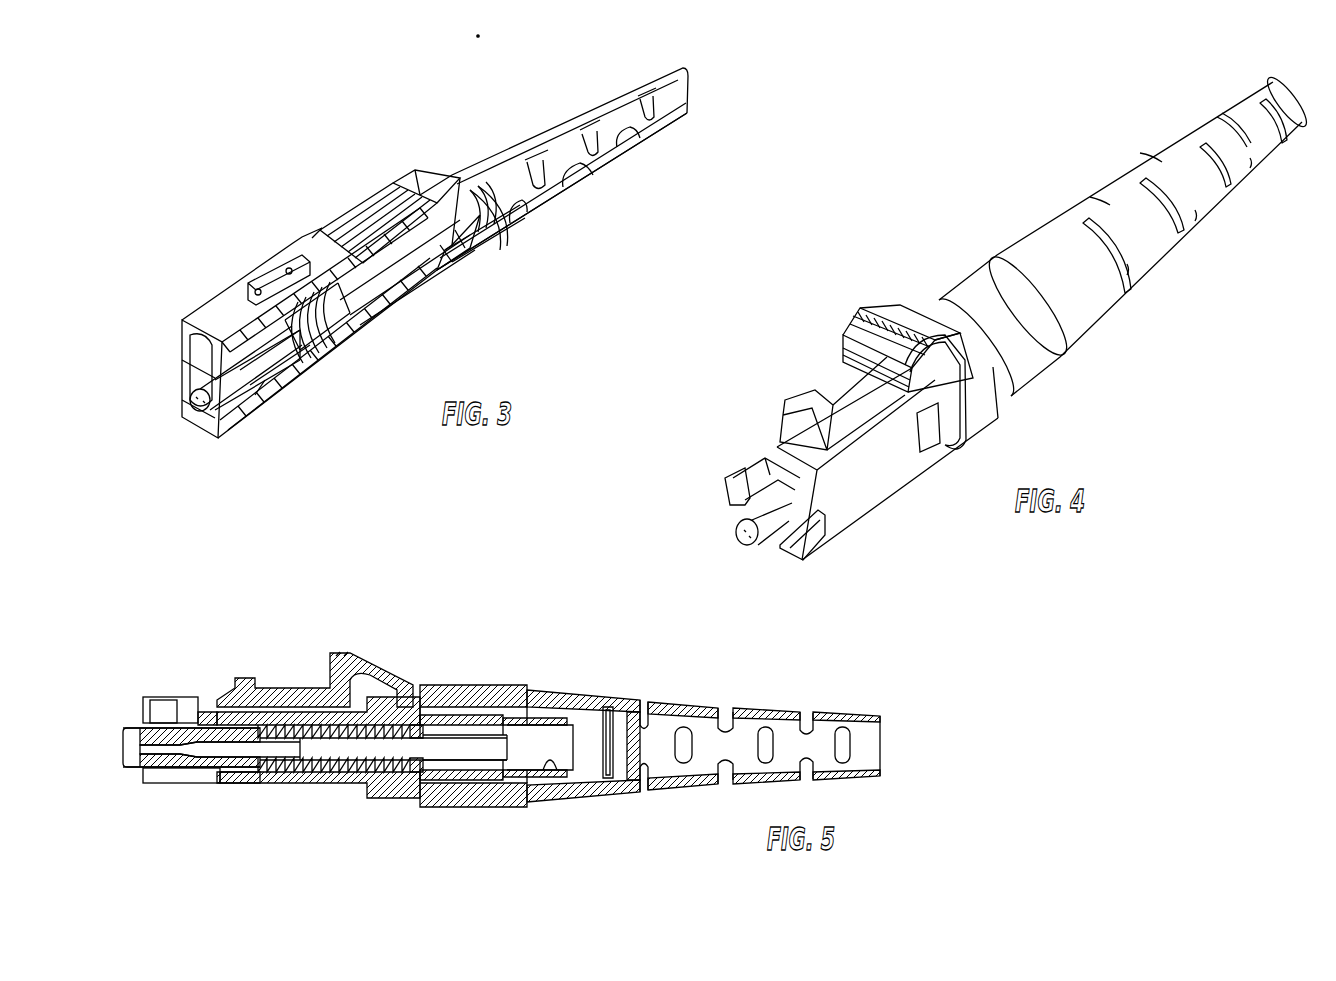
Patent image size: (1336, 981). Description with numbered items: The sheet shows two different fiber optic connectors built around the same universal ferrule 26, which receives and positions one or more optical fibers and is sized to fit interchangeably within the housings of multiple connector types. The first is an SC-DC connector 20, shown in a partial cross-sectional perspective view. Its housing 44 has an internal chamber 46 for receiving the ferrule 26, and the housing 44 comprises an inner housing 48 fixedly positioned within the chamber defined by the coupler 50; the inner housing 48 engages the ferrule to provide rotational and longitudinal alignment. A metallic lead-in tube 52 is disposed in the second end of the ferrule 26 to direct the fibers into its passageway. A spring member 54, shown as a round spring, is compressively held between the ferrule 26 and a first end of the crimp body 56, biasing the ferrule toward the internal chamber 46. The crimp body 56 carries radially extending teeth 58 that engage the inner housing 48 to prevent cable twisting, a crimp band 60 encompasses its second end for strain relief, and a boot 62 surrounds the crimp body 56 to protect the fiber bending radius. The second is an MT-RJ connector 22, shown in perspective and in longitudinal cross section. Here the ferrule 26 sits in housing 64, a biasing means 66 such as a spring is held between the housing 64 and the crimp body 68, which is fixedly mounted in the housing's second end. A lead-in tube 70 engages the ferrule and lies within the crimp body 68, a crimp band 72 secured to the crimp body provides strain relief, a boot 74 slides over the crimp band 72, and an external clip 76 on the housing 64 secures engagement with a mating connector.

In FIG. 3, the optical fiber connector 20 is at (587, 263).
In FIG. 4, the optical fiber connector 22 is at (1132, 405).
In FIG. 5, the optical fiber connector 22 is at (488, 840).
In FIG. 3, the universal ferrule 26 is at (193, 380).
In FIG. 4, the universal ferrule 26 is at (740, 522).
In FIG. 5, the universal ferrule 26 is at (130, 770).
In FIG. 3, the housing 44 is at (285, 225).
In FIG. 3, the internal chamber 46 is at (250, 330).
In FIG. 3, the inner housing 48 is at (272, 377).
In FIG. 3, the coupler 50 is at (405, 197).
In FIG. 3, the lead-in tube 52 is at (340, 312).
In FIG. 3, the spring member 54 is at (325, 360).
In FIG. 3, the crimp body 56 is at (318, 228).
In FIG. 3, the radially extending teeth 58 is at (417, 287).
In FIG. 3, the crimp band 60 is at (467, 262).
In FIG. 3, the boot 62 is at (548, 212).
In FIG. 4, the housing 64 is at (880, 480).
In FIG. 5, the housing 64 is at (232, 785).
In FIG. 5, the biasing means 66 is at (310, 783).
In FIG. 5, the crimp body 68 is at (393, 798).
In FIG. 5, the lead-in tube 70 is at (443, 742).
In FIG. 5, the crimp band 72 is at (545, 765).
In FIG. 4, the boot 74 is at (1090, 305).
In FIG. 5, the boot 74 is at (633, 700).
In FIG. 4, the external clip 76 is at (847, 388).
In FIG. 5, the external clip 76 is at (297, 688).